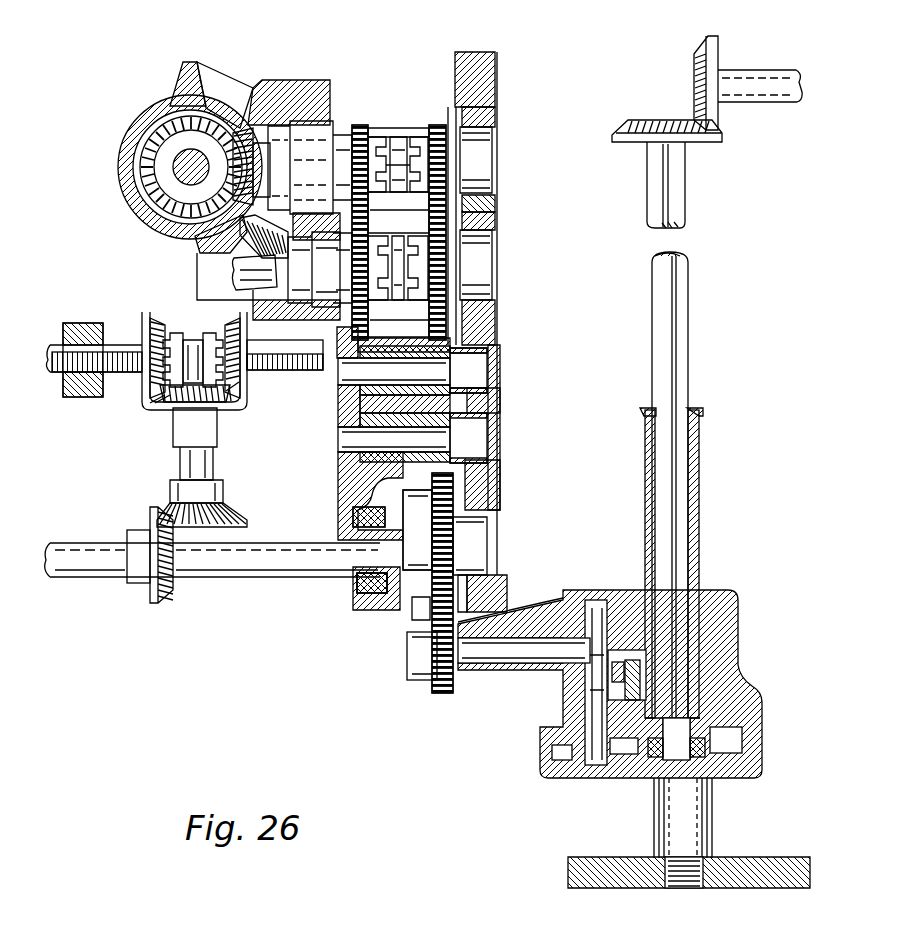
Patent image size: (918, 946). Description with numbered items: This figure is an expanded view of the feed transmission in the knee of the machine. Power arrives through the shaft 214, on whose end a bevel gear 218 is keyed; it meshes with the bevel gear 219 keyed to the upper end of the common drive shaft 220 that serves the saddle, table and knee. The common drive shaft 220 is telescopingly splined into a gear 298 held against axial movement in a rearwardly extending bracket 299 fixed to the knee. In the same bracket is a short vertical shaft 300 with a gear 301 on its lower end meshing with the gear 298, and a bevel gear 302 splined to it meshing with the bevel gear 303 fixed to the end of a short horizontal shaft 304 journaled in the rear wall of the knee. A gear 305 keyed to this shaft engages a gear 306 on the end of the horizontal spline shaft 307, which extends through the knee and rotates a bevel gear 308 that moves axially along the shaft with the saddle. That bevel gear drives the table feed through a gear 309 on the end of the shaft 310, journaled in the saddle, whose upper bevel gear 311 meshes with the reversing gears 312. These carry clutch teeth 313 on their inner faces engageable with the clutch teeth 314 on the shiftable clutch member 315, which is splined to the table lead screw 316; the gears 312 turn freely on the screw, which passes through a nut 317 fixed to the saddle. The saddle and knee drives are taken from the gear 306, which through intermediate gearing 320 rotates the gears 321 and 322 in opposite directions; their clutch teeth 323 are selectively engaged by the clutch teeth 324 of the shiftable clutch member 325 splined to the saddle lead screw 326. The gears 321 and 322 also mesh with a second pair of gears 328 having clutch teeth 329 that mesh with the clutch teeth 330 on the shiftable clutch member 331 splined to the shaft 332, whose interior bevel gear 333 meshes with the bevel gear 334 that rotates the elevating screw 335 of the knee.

The shaft 214 is at (760, 78).
The bevel gear 218 is at (704, 46).
The bevel gear 219 is at (618, 128).
The common drive shaft 220 is at (660, 210).
The gear 298 is at (700, 690).
The bracket 299 is at (740, 625).
The short vertical shaft 300 is at (618, 598).
The gear 301 is at (545, 740).
The bevel gear 302 is at (643, 588).
The bevel gear 303 is at (540, 584).
The short horizontal shaft 304 is at (500, 650).
The gear 305 is at (436, 686).
The gear 306 is at (432, 532).
The horizontal spline shaft 307 is at (332, 542).
The bevel gear 308 is at (150, 522).
The gear 309 is at (244, 512).
The shaft 310 is at (214, 457).
The bevel gear 311 is at (234, 406).
The reversing gears 312 is at (160, 330).
The clutch teeth 313 is at (176, 332).
The clutch teeth 314 is at (178, 398).
The shiftable clutch member 315 is at (190, 338).
The table lead screw 316 is at (47, 340).
The nut 317 is at (80, 325).
The intermediate gearing 320 is at (452, 387).
The gear 321 is at (360, 318).
The gear 322 is at (432, 328).
The clutch teeth 323 is at (378, 234).
The clutch teeth 324 is at (424, 238).
The shiftable clutch member 325 is at (418, 236).
The saddle lead screw 326 is at (250, 282).
The second pair of gears 328 is at (430, 135).
The clutch teeth 329 is at (424, 140).
The clutch teeth 330 is at (385, 140).
The shiftable clutch member 331 is at (418, 120).
The shaft 332 is at (355, 122).
The bevel gear 333 is at (256, 95).
The bevel gear 334 is at (178, 130).
The elevating screw 335 is at (178, 166).